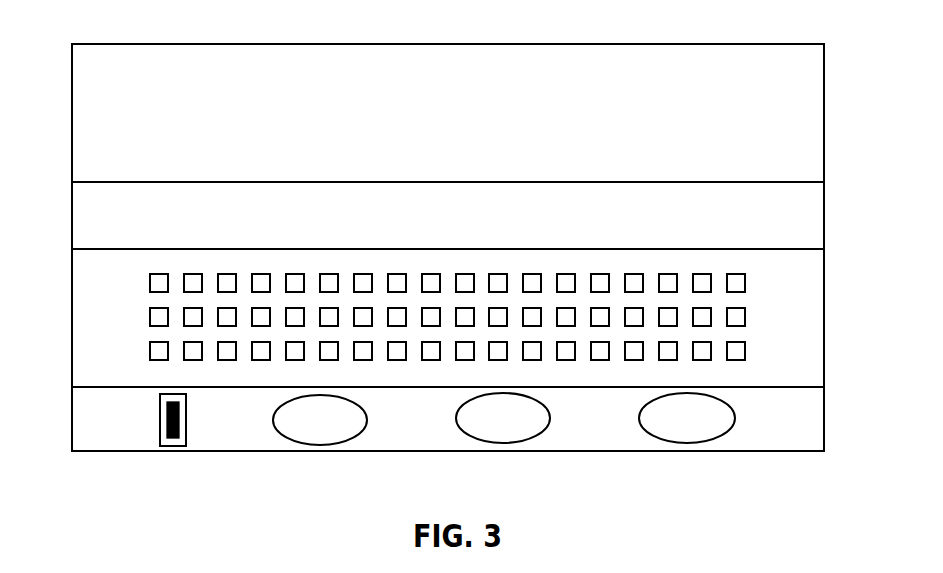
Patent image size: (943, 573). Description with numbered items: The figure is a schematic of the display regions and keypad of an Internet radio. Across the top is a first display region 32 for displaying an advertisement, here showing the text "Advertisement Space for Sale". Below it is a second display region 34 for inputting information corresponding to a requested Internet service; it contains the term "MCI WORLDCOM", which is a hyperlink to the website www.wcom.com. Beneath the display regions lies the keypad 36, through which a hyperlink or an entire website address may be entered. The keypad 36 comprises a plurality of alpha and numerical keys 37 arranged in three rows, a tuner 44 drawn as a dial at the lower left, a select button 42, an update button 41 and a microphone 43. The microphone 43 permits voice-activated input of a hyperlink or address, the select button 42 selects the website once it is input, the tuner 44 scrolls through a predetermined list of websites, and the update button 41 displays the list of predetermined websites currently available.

The first display region 32 is at (481, 44).
The second display region 34 is at (824, 210).
The keypad 36 is at (837, 258).
The alpha and numerical keys 37 is at (150, 318).
The update button 41 is at (475, 440).
The select button 42 is at (293, 440).
The microphone 43 is at (653, 442).
The tuner 44 is at (160, 443).